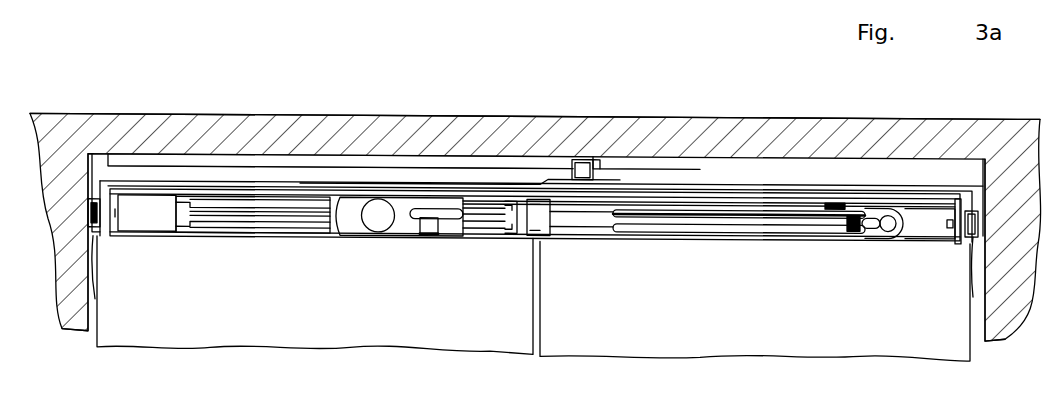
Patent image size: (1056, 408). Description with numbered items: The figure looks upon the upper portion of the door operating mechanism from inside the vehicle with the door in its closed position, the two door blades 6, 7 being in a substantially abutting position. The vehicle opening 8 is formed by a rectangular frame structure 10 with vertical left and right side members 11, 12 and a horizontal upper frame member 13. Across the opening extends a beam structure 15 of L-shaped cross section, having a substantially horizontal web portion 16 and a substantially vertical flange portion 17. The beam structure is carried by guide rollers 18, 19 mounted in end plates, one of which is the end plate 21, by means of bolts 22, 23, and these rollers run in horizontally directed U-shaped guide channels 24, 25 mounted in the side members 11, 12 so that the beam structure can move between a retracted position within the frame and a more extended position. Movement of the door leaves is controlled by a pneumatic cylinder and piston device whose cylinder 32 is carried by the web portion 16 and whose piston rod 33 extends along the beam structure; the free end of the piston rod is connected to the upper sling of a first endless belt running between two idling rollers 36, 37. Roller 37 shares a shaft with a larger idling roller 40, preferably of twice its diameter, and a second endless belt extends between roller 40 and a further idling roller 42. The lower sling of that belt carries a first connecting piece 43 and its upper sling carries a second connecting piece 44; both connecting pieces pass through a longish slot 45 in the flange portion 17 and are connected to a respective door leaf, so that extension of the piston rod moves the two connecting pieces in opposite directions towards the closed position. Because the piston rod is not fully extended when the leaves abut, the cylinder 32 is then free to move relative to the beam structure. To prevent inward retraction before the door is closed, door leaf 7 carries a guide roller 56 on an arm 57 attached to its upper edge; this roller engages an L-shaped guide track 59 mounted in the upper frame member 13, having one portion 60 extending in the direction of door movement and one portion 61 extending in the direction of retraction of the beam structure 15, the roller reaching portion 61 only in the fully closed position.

The door blade 6 is at (781, 308).
The door blade 7 is at (396, 318).
The opening 8 is at (825, 166).
The frame structure 10 is at (357, 111).
The left side member 11 is at (67, 328).
The right side member 12 is at (1003, 334).
The upper frame member 13 is at (594, 126).
The beam structure 15 is at (772, 180).
The web portion 16 is at (810, 194).
The flange portion 17 is at (916, 233).
The guide roller 18 is at (100, 234).
The guide roller 19 is at (975, 204).
The end plate 21 is at (953, 238).
The bolt 22 is at (119, 214).
The bolt 23 is at (947, 218).
The guide channel 24 is at (100, 243).
The guide channel 25 is at (972, 289).
The cylinder 32 is at (265, 242).
The piston rod 33 is at (596, 221).
The idling roller 36 is at (623, 225).
The idling roller 37 is at (885, 226).
The idling roller 40 is at (905, 202).
The idling roller 42 is at (377, 223).
The first connecting piece 43 is at (432, 238).
The second connecting piece 44 is at (838, 199).
The slot 45 is at (568, 212).
The guide roller 56 is at (575, 162).
The arm 57 is at (521, 181).
The guide track 59 is at (403, 150).
The track portion 60 is at (288, 162).
The track portion 61 is at (600, 164).